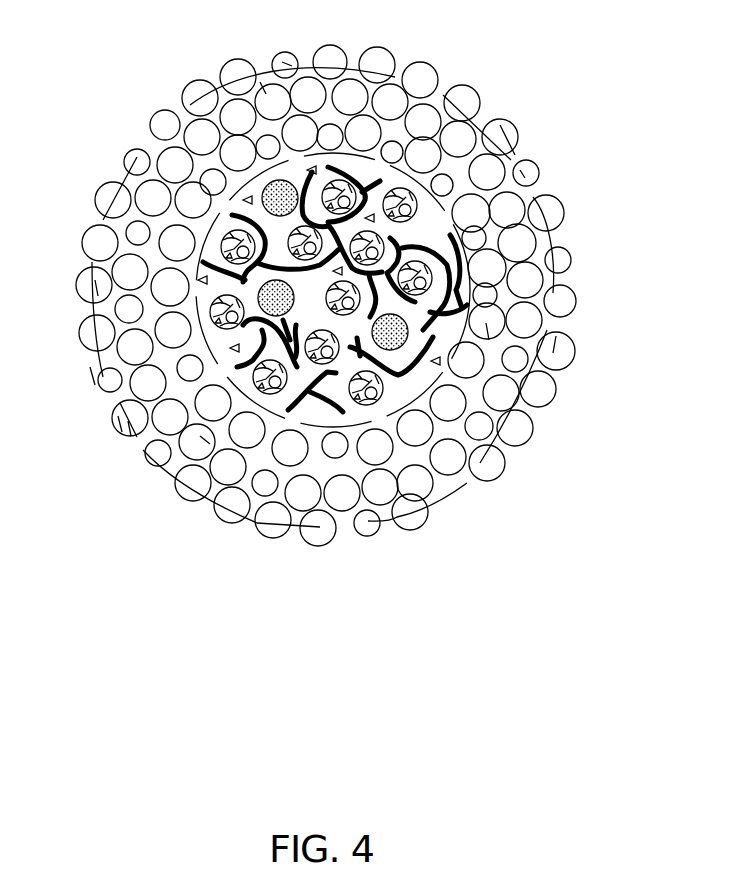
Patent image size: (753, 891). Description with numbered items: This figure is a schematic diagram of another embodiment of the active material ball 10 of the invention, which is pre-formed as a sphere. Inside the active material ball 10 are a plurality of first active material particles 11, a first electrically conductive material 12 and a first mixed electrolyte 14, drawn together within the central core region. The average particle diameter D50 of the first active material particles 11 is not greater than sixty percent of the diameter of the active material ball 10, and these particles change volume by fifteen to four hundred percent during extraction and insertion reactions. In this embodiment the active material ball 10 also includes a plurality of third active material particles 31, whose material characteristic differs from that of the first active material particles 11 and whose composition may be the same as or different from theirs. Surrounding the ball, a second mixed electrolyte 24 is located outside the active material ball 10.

The active material ball 10 is at (196, 221).
The first active material particles 11 is at (435, 270).
The first electrically conductive material 12 is at (437, 240).
The first mixed electrolyte 14 is at (248, 197).
The second mixed electrolyte 24 is at (512, 430).
The third active material particles 31 is at (400, 348).